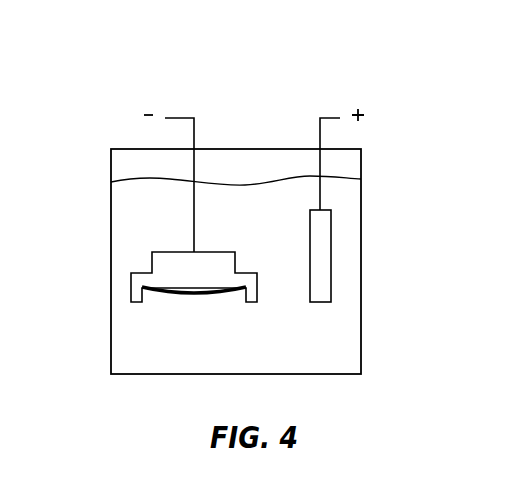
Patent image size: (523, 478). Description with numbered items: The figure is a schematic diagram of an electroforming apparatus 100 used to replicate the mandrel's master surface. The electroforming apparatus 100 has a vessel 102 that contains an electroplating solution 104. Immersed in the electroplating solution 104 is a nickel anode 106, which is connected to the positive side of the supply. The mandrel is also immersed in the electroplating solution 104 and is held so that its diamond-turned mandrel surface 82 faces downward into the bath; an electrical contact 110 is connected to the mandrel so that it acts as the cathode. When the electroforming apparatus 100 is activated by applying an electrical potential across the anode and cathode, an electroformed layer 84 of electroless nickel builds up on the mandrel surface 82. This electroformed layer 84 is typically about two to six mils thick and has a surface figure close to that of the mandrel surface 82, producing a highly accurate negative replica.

The electroforming apparatus 100 is at (136, 66).
The vessel 102 is at (111, 230).
The electroplating solution 104 is at (282, 357).
The nickel anode 106 is at (323, 237).
The electrical contact 110 is at (194, 137).
The mandrel surface 82 is at (208, 292).
The electroformed layer 84 is at (160, 291).